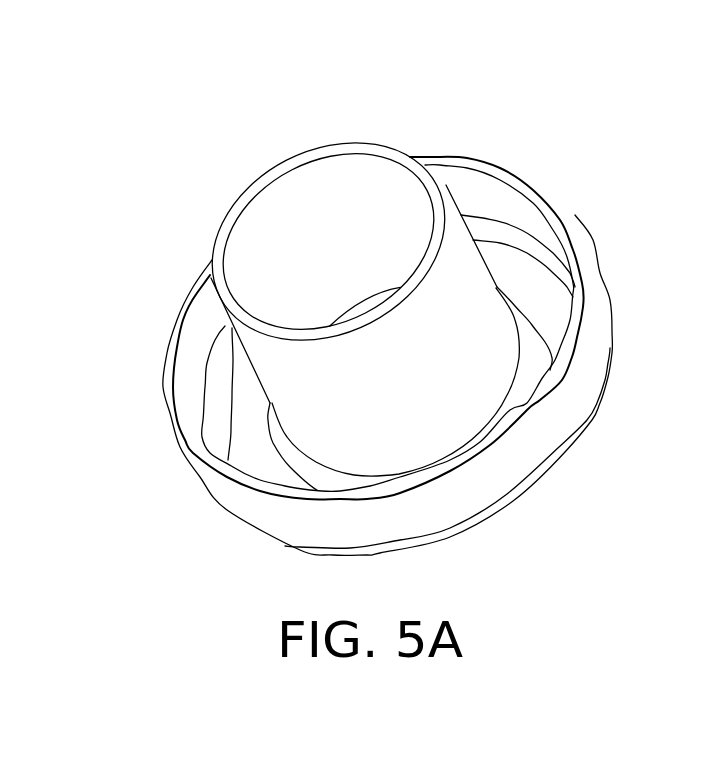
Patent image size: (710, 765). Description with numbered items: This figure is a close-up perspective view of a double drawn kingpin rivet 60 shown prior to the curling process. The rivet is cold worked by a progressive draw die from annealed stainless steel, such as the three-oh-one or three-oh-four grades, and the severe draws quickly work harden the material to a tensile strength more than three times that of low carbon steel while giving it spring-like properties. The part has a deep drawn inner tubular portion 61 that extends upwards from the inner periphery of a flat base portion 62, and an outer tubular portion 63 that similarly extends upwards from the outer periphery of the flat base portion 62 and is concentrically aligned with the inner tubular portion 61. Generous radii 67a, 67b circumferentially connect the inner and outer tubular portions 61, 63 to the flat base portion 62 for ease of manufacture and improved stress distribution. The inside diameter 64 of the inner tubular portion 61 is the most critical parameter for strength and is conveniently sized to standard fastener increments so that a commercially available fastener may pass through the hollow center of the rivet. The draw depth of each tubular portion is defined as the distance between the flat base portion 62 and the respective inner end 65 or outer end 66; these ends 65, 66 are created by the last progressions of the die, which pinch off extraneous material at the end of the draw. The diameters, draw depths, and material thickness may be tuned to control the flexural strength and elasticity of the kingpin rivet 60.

The double drawn kingpin rivet 60 is at (240, 152).
The inner tubular portion 61 is at (273, 376).
The flat base portion 62 is at (248, 443).
The outer tubular portion 63 is at (245, 497).
The inside diameter 64 is at (263, 258).
The inner end 65 is at (440, 195).
The outer end 66 is at (563, 220).
The radius 67a is at (553, 260).
The radius 67b is at (528, 343).